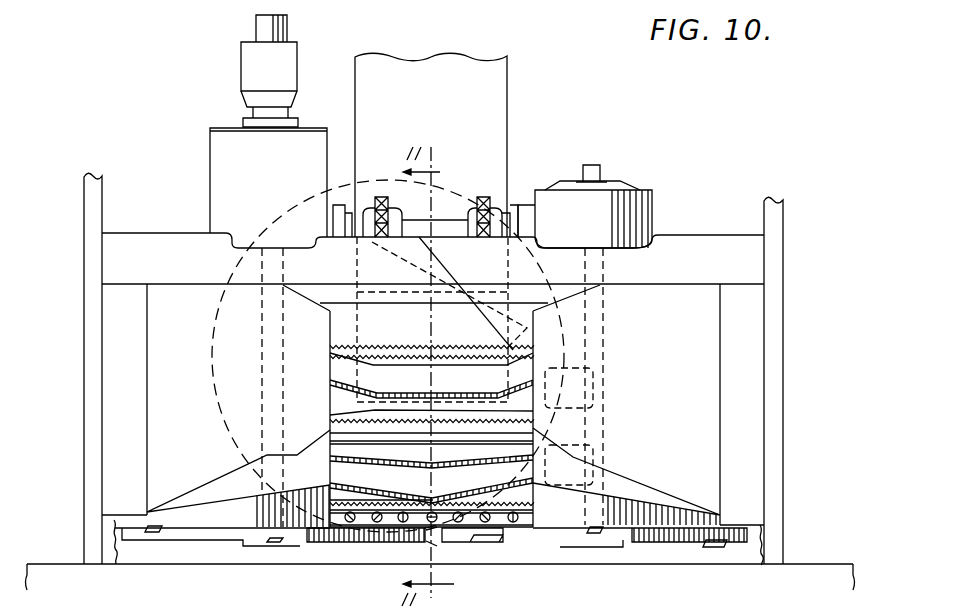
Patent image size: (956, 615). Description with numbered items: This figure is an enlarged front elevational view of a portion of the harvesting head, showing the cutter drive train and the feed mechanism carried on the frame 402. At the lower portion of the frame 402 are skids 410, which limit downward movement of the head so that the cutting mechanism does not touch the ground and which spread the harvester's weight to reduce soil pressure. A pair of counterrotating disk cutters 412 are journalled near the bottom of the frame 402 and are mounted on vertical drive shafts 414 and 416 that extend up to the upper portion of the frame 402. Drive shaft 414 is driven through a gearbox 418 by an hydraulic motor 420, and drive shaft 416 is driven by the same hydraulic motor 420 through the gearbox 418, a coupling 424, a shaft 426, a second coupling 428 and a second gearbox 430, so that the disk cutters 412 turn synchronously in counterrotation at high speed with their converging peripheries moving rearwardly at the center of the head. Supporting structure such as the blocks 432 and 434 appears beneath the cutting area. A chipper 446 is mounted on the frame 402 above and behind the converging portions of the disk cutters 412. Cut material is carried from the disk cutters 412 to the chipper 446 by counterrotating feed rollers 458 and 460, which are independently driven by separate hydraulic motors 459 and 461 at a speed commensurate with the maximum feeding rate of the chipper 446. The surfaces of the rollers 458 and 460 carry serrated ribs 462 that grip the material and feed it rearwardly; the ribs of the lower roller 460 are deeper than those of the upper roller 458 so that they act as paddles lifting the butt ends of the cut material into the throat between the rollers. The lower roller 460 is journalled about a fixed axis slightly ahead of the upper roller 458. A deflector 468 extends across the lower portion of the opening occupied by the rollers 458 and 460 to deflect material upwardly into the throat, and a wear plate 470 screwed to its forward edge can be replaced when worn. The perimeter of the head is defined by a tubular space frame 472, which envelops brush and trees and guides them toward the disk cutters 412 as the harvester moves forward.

The frame 402 is at (703, 459).
The skids 410 is at (100, 547).
The disk cutters 412 is at (214, 543).
The vertical drive shaft 414 is at (266, 352).
The vertical drive shaft 416 is at (598, 340).
The gearbox 418 is at (222, 167).
The hydraulic motor 420 is at (248, 72).
The coupling 424 is at (402, 188).
The shaft 426 is at (504, 185).
The coupling 428 is at (434, 226).
The gearbox 430 is at (643, 208).
The hatched support block 432 is at (358, 543).
The support block 434 is at (490, 544).
The chipper 446 is at (441, 186).
The upper feed roller 458 is at (340, 365).
The hydraulic motor 459 is at (596, 400).
The lower feed roller 460 is at (345, 471).
The hydraulic motor 461 is at (600, 452).
The serrated ribs 462 is at (437, 365).
The deflector 468 is at (522, 506).
The wear plate 470 is at (526, 515).
The tubular space frame 472 is at (84, 372).